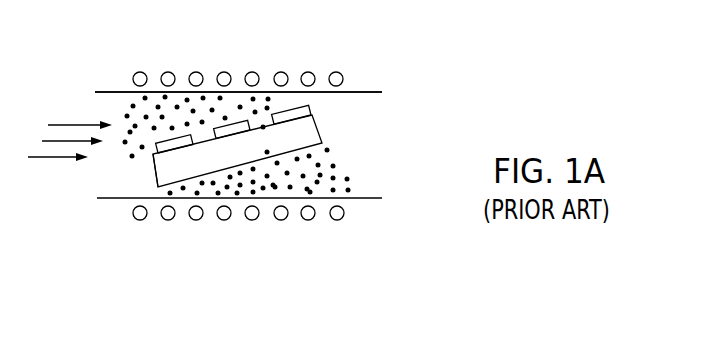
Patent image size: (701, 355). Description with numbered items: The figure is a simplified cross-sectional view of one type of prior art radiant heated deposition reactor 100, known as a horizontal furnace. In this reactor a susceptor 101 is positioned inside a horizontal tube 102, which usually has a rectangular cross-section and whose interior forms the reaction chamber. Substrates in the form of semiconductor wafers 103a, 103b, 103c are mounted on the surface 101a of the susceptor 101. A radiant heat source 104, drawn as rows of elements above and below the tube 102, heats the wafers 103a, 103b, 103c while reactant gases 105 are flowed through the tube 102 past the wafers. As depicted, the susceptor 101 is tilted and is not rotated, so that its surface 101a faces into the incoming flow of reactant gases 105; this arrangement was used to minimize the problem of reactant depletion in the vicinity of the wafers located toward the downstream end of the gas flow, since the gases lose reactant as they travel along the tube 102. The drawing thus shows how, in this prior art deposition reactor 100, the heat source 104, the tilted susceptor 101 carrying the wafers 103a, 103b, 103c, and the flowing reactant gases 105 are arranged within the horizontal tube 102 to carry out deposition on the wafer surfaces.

The radiant heated deposition reactor 100 is at (342, 54).
The susceptor 101 is at (318, 122).
The surface of susceptor 101a is at (153, 156).
The horizontal tube 102 is at (109, 92).
The semiconductor wafer 103a is at (193, 144).
The semiconductor wafer 103b is at (300, 134).
The semiconductor wafer 103c is at (309, 106).
The radiant heat source 104 is at (194, 72).
The reactant gases 105 is at (132, 156).